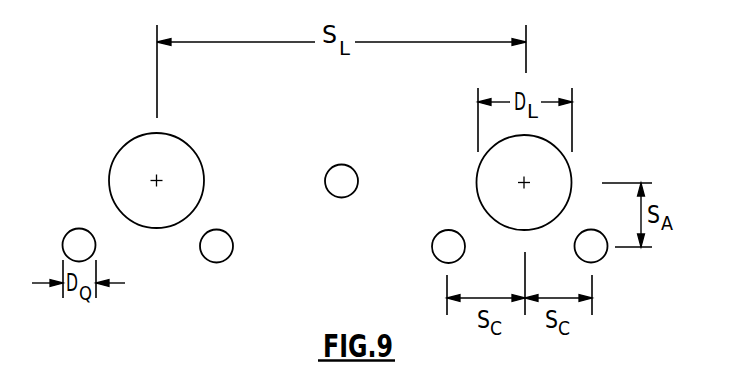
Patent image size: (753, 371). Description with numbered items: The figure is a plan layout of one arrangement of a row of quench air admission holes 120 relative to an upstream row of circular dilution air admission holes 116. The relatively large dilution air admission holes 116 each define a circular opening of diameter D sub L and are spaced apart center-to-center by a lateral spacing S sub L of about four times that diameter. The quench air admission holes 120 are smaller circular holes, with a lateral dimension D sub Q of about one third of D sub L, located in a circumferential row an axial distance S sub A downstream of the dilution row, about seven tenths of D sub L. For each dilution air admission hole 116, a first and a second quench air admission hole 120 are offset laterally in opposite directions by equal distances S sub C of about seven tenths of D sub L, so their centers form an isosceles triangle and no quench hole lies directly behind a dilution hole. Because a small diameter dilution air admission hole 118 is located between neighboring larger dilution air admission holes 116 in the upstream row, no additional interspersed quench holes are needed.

The dilution air admission hole 116 is at (202, 163).
The small diameter dilution air admission hole 118 is at (355, 170).
The quench air admission hole 120 is at (79, 228).